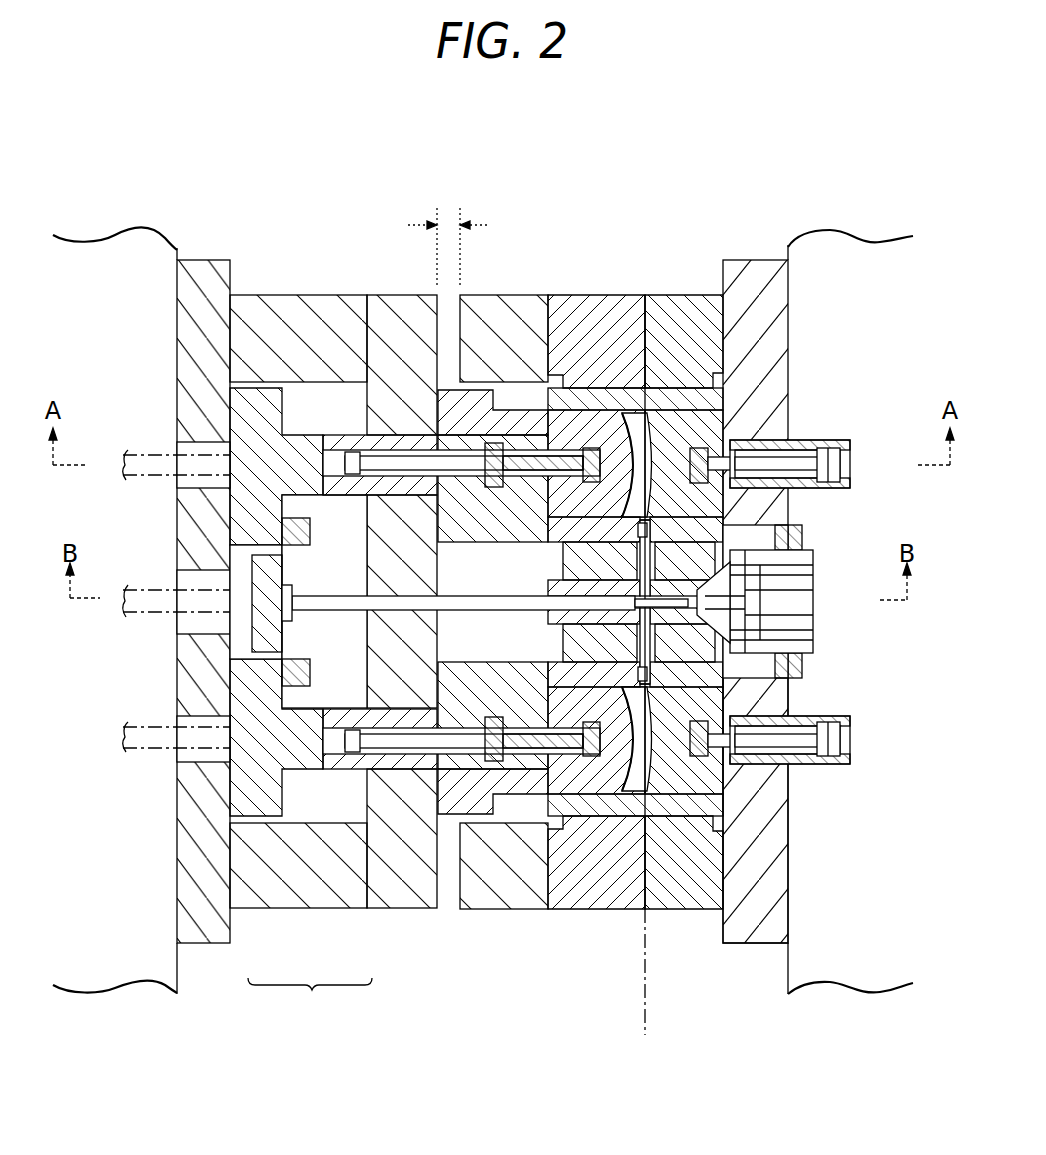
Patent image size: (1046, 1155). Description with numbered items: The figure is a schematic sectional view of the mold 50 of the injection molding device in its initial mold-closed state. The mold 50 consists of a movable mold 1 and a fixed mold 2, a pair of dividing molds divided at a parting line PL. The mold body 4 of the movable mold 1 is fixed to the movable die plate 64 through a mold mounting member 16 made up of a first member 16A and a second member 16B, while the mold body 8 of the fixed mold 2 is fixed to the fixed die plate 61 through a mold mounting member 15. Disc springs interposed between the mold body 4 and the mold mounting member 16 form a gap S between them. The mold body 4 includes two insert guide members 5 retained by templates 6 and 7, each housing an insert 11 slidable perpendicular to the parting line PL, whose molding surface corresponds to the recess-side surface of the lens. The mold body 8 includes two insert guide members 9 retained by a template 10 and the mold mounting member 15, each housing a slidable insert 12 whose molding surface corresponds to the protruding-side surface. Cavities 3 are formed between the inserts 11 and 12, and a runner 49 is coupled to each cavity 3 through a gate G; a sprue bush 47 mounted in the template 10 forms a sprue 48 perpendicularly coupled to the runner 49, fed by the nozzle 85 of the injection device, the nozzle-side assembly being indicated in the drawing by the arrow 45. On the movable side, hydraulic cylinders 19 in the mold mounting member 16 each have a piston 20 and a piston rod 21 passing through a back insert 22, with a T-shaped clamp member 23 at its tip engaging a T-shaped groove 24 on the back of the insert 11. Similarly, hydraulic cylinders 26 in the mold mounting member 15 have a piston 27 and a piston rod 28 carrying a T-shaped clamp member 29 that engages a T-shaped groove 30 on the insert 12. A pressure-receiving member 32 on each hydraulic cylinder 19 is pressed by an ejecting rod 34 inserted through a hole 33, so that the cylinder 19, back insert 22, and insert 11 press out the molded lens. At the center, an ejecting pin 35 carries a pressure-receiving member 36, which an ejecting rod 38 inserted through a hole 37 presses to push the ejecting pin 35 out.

The movable mold 1 is at (464, 997).
The fixed mold 2 is at (722, 1017).
The cavity 3 is at (648, 440).
The mold body 4 is at (567, 887).
The insert guide member 5 is at (577, 400).
The template 6 is at (590, 807).
The template 7 is at (478, 885).
The mold body 8 is at (712, 887).
The insert guide member 9 is at (690, 402).
The template 10 is at (680, 887).
The insert 11 is at (613, 437).
The insert 12 is at (673, 420).
The mold mounting member 15 is at (780, 900).
The mold mounting member 16 is at (310, 997).
The first member 16A is at (283, 885).
The second member 16B is at (366, 893).
The hydraulic cylinder 19 is at (345, 497).
The piston 20 is at (352, 460).
The piston rod 21 is at (380, 467).
The back insert 22 is at (508, 420).
The T-shaped clamp member 23 is at (567, 453).
The T-shaped groove 24 is at (610, 465).
The hydraulic cylinder 26 is at (853, 455).
The piston 27 is at (827, 468).
The piston rod 28 is at (837, 460).
The T-shaped clamp member 29 is at (793, 462).
The T-shaped groove 30 is at (692, 462).
The pressure-receiving member 32 is at (240, 402).
The hole 33 is at (212, 440).
The ejecting rod 34 is at (118, 456).
The ejecting pin 35 is at (345, 592).
The pressure-receiving member 36 is at (267, 568).
The hole 37 is at (210, 637).
The ejecting rod 38 is at (140, 618).
The nozzle unit 45 is at (848, 665).
The sprue bush 47 is at (737, 566).
The sprue 48 is at (737, 628).
The runner 49 is at (657, 558).
The mold 50 is at (594, 165).
The fixed die plate 61 is at (801, 236).
The movable die plate 64 is at (180, 252).
The nozzle 85 is at (810, 556).
The gate G is at (649, 522).
The gap S is at (448, 234).
The parting line PL is at (643, 680).